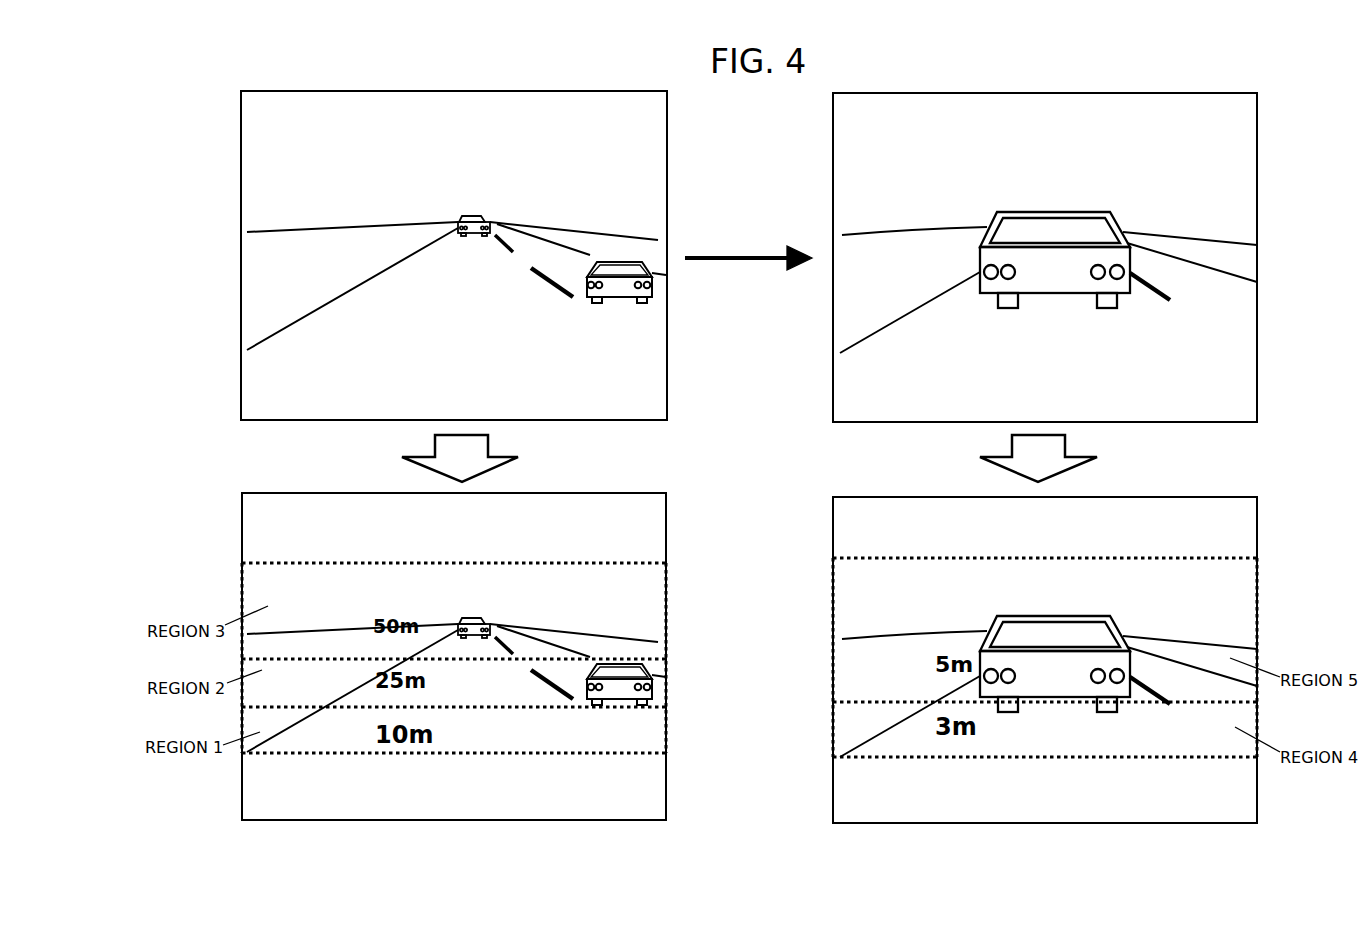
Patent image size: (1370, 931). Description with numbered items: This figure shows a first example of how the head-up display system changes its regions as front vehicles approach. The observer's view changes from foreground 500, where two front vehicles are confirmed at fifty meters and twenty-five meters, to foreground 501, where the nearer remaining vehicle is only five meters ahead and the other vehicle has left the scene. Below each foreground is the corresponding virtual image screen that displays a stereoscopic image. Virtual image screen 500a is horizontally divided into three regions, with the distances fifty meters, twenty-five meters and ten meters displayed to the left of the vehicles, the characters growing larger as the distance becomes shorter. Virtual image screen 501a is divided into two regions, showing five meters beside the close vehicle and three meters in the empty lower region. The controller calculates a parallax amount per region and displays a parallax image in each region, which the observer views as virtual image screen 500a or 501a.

The foreground 500 is at (665, 140).
The foreground 501 is at (1257, 122).
The virtual image screen 500a is at (666, 533).
The virtual image screen 501a is at (1257, 523).